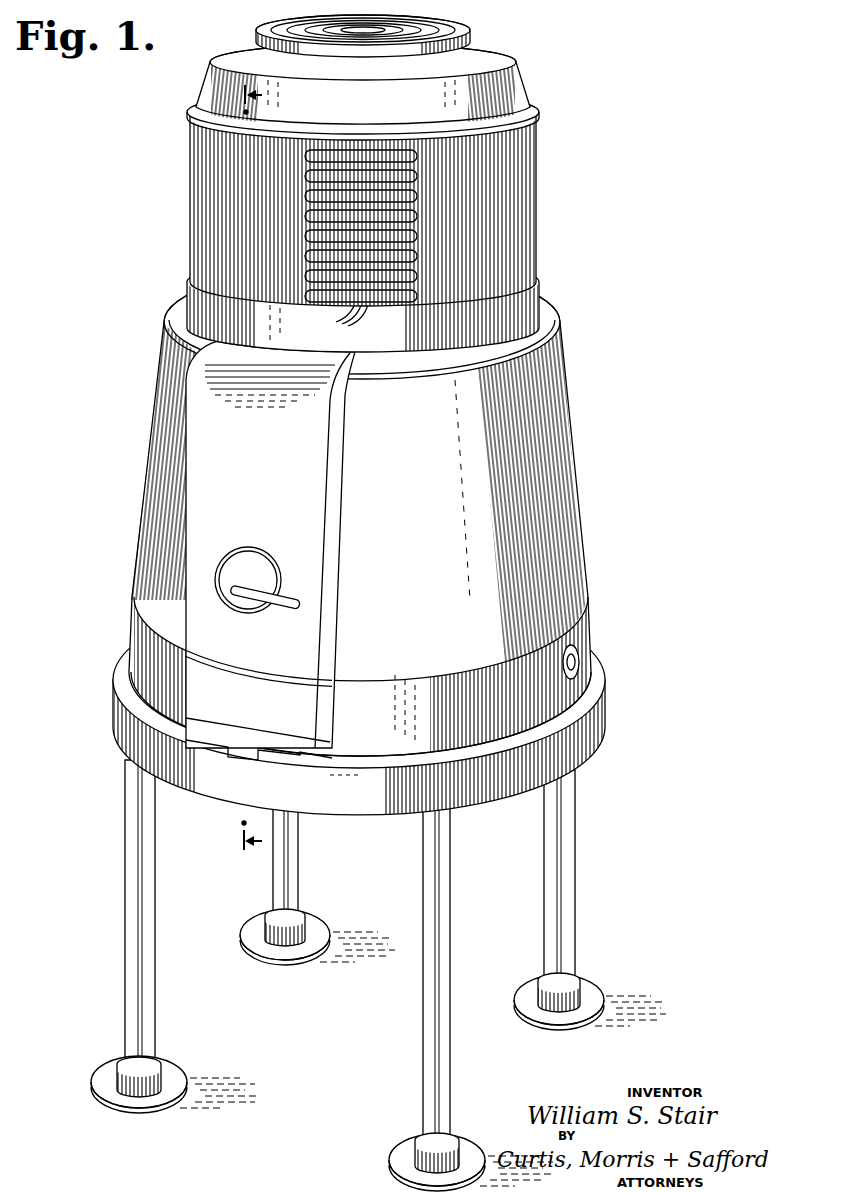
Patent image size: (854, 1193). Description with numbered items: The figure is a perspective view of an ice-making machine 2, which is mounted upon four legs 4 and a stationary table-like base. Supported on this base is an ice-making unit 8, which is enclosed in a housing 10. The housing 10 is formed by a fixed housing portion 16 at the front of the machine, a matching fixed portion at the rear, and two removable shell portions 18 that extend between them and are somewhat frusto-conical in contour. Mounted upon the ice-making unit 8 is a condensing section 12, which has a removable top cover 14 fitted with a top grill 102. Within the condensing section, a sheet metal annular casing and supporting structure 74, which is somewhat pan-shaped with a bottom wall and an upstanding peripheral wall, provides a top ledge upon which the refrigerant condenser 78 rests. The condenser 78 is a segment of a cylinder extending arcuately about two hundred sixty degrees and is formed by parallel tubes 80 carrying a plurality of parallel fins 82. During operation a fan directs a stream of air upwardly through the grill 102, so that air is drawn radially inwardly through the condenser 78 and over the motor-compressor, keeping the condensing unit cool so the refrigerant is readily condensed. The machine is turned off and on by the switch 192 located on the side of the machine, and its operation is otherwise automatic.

The ice-making machine 2 is at (84, 269).
The ice-making unit 8 is at (573, 329).
The housing 10 is at (572, 445).
The condensing section 12 is at (560, 119).
The top cover 14 is at (505, 89).
The fixed housing portion 16 is at (208, 490).
The removable shell portion 18 is at (163, 426).
The annular casing and supporting structure 74 is at (192, 294).
The refrigerant condenser 78 is at (543, 185).
The parallel tubes 80 is at (368, 182).
The parallel fins 82 is at (335, 317).
The top grill 102 is at (462, 21).
The switch 192 is at (582, 651).
The legs 4 is at (134, 991).